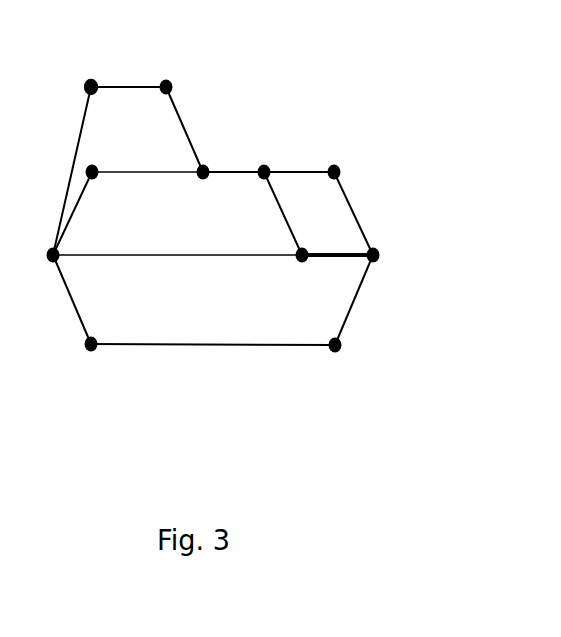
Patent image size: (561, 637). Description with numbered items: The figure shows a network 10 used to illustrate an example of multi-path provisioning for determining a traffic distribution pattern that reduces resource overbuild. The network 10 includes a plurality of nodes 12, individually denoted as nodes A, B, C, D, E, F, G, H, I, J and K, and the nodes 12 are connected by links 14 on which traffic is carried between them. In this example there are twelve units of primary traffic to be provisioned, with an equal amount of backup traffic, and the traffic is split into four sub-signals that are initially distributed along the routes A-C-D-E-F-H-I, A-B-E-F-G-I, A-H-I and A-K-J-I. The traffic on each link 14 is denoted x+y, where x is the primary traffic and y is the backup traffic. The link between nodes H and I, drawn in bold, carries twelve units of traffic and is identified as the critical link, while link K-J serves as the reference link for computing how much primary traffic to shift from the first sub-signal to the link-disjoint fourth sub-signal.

The network 10 is at (313, 88).
The nodes 12 is at (91, 80).
The links 14 is at (245, 345).